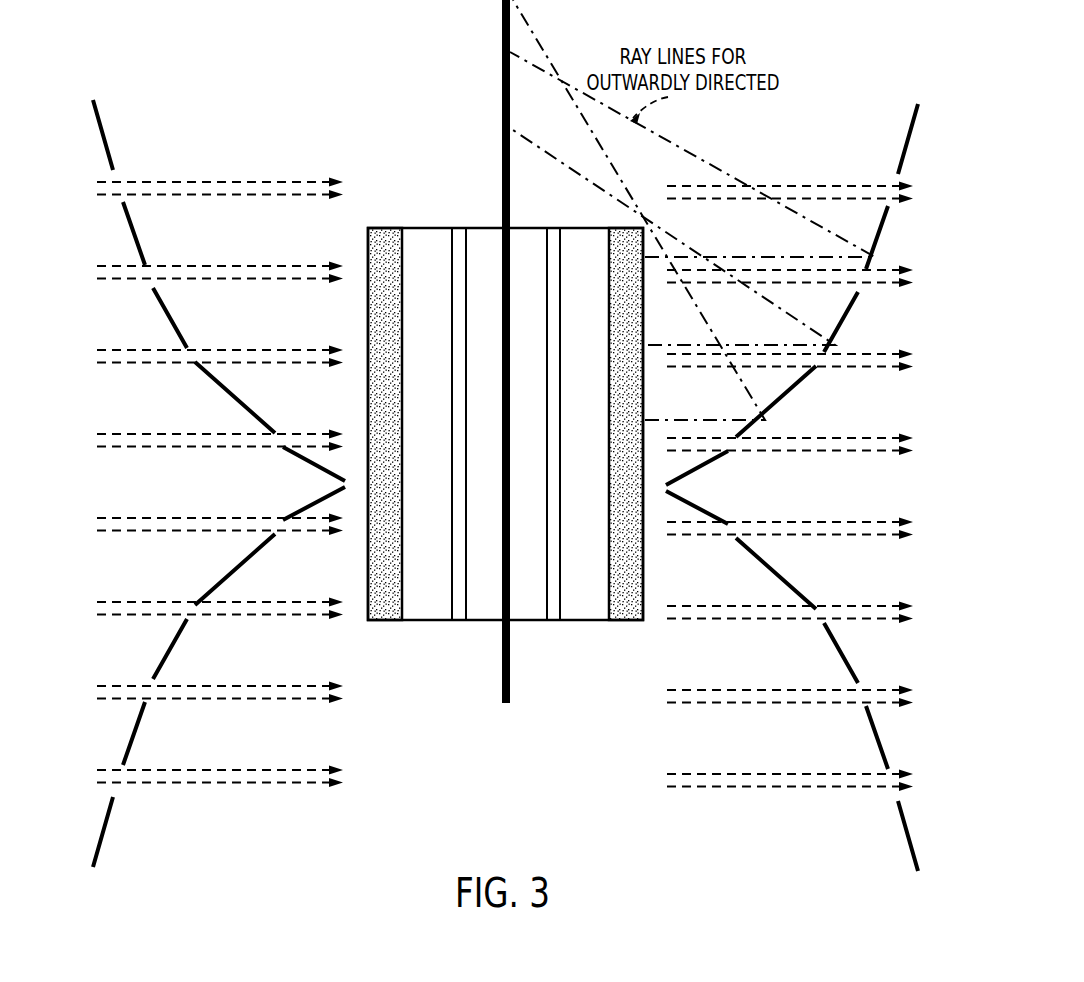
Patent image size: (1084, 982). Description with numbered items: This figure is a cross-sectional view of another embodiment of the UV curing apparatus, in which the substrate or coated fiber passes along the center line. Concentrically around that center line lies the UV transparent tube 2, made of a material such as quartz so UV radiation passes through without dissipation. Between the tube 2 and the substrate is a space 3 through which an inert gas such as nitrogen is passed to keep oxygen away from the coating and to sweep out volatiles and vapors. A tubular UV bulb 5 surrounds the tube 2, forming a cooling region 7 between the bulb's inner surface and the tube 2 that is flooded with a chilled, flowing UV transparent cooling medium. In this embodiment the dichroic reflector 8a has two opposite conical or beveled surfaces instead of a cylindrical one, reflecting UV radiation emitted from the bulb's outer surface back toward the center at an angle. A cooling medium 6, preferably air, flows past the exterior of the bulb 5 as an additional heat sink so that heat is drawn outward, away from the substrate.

The UV transparent tube 2 is at (462, 240).
The space 3 is at (493, 240).
The tubular UV bulb 5 is at (382, 240).
The cooling medium 6 is at (164, 180).
The cooling region 7 is at (430, 240).
The dichroic reflector 8a is at (100, 114).